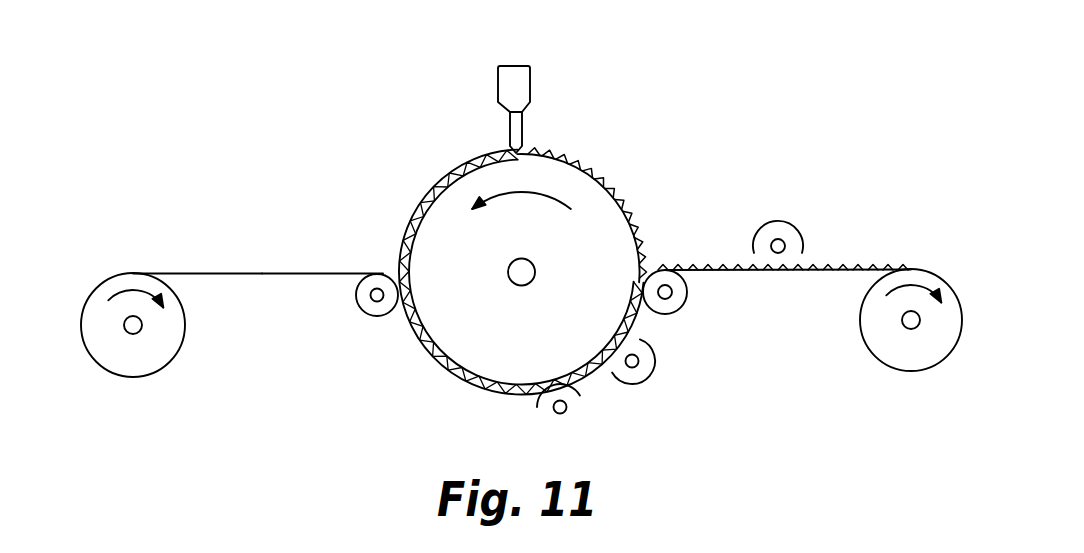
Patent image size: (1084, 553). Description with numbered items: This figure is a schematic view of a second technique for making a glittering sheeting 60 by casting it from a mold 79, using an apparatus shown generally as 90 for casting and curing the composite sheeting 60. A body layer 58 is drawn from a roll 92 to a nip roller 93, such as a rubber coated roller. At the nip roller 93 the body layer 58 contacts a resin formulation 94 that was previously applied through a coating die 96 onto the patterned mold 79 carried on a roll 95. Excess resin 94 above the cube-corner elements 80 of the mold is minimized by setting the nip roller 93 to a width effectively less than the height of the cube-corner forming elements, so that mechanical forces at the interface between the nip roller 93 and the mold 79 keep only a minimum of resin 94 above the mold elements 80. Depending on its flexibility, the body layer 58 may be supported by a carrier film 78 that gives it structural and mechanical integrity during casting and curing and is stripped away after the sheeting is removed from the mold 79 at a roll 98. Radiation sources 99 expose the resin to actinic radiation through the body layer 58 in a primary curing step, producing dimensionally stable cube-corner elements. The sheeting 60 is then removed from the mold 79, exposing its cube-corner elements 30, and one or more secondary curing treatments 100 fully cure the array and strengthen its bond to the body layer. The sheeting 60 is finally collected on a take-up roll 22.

The take-up roller 22 is at (876, 359).
The cube-corner elements 30 is at (650, 268).
The body layer 58 is at (210, 272).
The glittering sheeting 60 is at (861, 243).
The carrier film 78 is at (252, 275).
The mold 79 is at (563, 148).
The cube-corner elements of the mold 80 is at (607, 183).
The apparatus 90 is at (698, 122).
The roll 92 is at (163, 366).
The nip roller 93 is at (356, 309).
The resin formulation 94 is at (510, 128).
The roll 95 is at (468, 358).
The coating die 96 is at (498, 76).
The roll 98 is at (683, 307).
The radiation sources 99 is at (610, 378).
The secondary curing treatments 100 is at (791, 223).